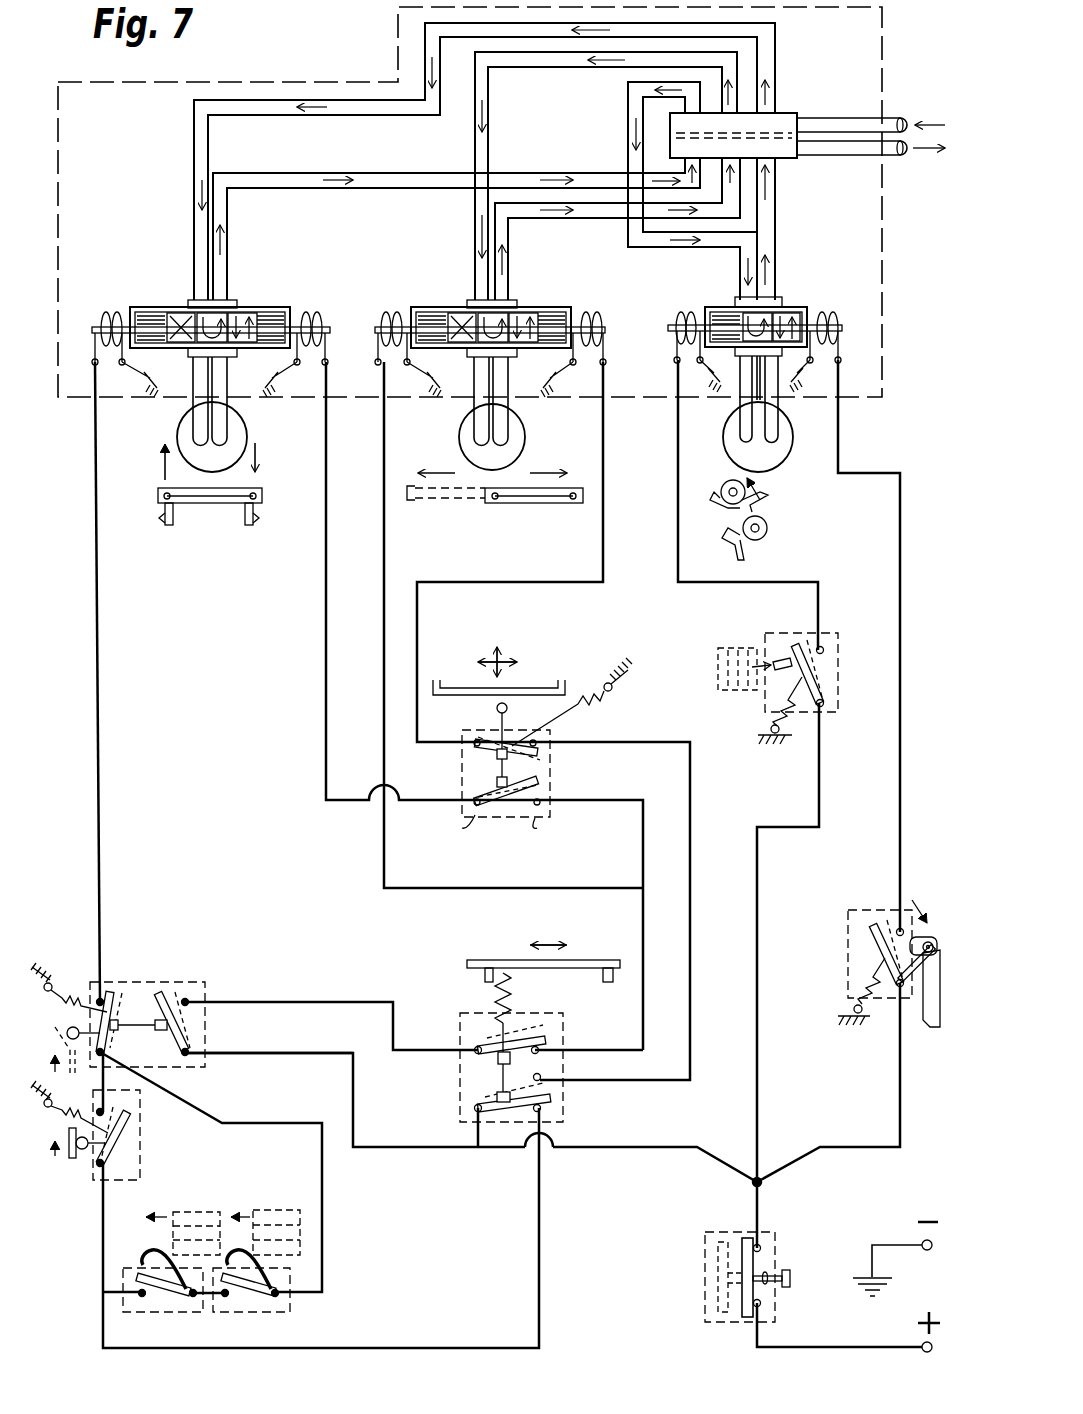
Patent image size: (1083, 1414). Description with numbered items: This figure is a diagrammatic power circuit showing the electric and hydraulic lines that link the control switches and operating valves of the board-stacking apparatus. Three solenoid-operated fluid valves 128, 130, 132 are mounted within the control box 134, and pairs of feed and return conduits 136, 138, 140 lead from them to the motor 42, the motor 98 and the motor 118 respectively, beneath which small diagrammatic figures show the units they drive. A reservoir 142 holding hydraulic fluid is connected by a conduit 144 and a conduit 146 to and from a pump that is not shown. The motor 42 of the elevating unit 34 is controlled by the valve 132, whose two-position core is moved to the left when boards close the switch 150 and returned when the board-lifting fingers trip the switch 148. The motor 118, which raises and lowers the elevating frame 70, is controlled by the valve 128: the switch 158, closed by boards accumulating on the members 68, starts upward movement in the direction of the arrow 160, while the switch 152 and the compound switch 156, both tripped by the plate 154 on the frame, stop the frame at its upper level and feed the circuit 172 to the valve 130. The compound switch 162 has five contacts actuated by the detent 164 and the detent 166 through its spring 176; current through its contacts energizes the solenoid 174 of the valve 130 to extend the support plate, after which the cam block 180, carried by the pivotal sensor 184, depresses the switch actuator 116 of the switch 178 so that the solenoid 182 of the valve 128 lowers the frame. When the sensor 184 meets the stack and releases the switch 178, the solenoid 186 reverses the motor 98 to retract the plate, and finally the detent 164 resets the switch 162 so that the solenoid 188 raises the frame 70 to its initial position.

The control box 134 is at (322, 82).
The feed and return conduits 140 is at (231, 255).
The reservoir 142 is at (782, 113).
The conduit 146 is at (865, 118).
The conduit 144 is at (860, 158).
The feed and return conduits 136 is at (779, 258).
The feed and return conduits 138 is at (512, 258).
The solenoid-operated fluid valve 130 is at (455, 300).
The solenoid-operated fluid valve 132 is at (720, 300).
The solenoid 186 is at (585, 304).
The solenoid 188 is at (115, 300).
The solenoid valve 128 is at (175, 300).
The solenoid 182 is at (306, 300).
The solenoid 174 is at (395, 307).
The motor 118 is at (245, 430).
The arrow 160 is at (163, 468).
The elevating frame 70 is at (208, 507).
The motor 98 is at (528, 433).
The motor 42 is at (790, 429).
The elevating unit 34 is at (763, 516).
The switch 148 is at (800, 633).
The sensor 184 is at (460, 688).
The cam block 180 is at (560, 700).
The switch actuator 116 is at (496, 708).
The switch 178 is at (490, 817).
The switch 150 is at (880, 910).
The compound switch 156 is at (153, 982).
The plate 154 is at (80, 1194).
The circuit 172 is at (292, 1052).
The switch 152 is at (140, 1125).
The members 68 is at (150, 1254).
The switch 158 is at (185, 1312).
The compound switch 162 is at (555, 1028).
The detent 164 is at (484, 976).
The detent 166 is at (604, 976).
The spring 176 is at (500, 1000).